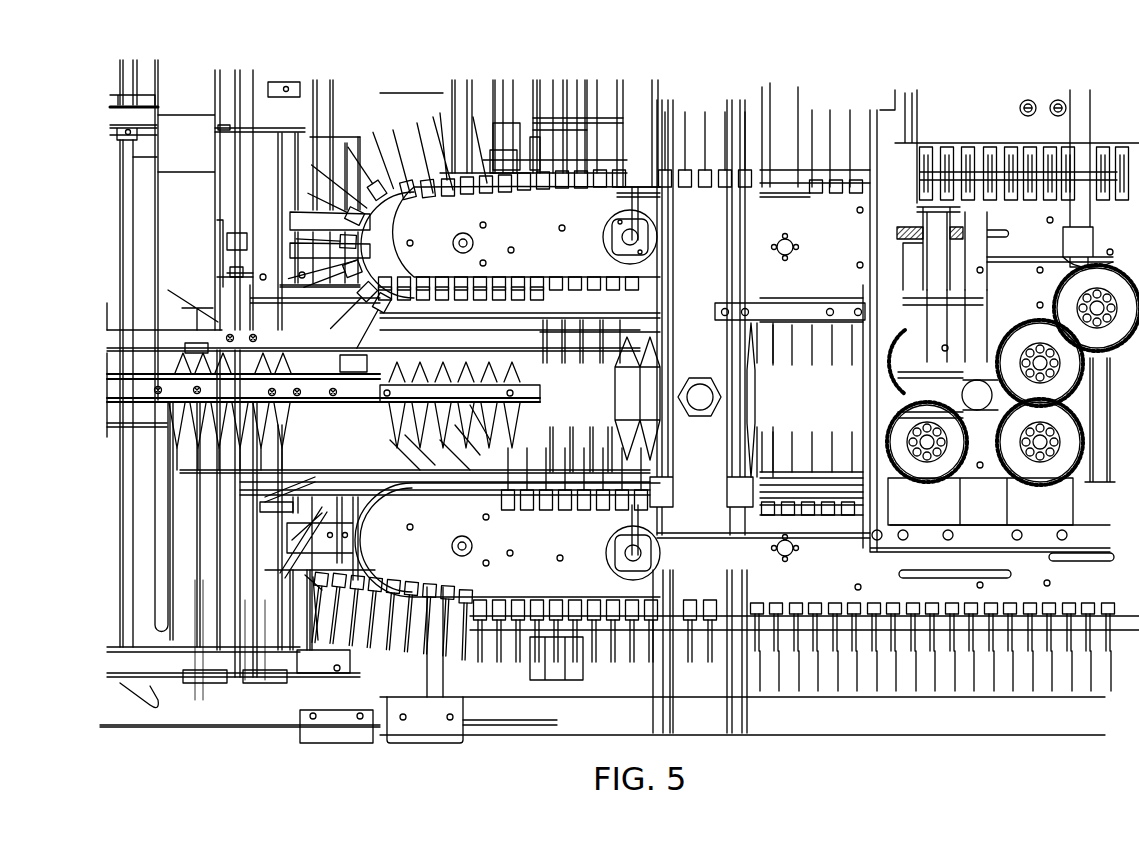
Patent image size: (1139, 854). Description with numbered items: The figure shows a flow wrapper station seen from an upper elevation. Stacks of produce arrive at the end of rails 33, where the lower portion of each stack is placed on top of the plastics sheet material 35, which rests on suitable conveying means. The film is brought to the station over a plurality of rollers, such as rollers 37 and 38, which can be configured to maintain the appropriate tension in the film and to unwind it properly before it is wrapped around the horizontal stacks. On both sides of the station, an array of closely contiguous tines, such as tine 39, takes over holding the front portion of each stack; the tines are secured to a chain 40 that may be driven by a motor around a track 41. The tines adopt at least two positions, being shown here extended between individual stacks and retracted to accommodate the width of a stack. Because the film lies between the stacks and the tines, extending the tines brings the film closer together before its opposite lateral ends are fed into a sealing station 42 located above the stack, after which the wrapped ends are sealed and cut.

The rails 33 is at (148, 428).
The plastics sheet material 35 is at (247, 623).
The roller 37 is at (203, 620).
The roller 38 is at (267, 630).
The tine 39 is at (527, 445).
The chain 40 is at (353, 570).
The track 41 is at (358, 187).
The sealing station 42 is at (923, 512).